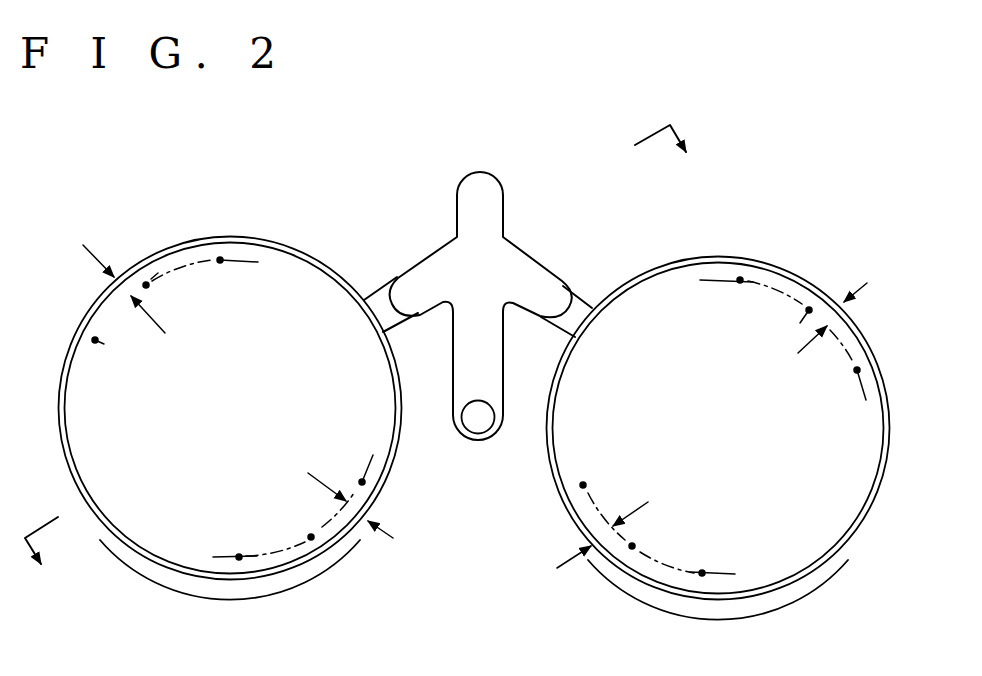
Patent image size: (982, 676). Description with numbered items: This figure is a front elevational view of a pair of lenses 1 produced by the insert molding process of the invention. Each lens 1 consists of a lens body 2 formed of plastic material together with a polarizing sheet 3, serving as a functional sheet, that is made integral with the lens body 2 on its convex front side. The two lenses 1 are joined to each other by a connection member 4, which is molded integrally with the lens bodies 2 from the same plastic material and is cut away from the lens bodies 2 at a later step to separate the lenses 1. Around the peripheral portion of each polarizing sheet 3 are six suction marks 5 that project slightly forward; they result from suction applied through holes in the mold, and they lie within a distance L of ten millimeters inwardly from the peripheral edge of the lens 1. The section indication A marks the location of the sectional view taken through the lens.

The lens 1 is at (273, 236).
The lens body 2 is at (302, 569).
The polarizing sheet 3 is at (157, 537).
The connection member 4 is at (515, 270).
The suction marks 5 is at (146, 285).
The distance L is at (127, 284).
The section line A is at (372, 362).